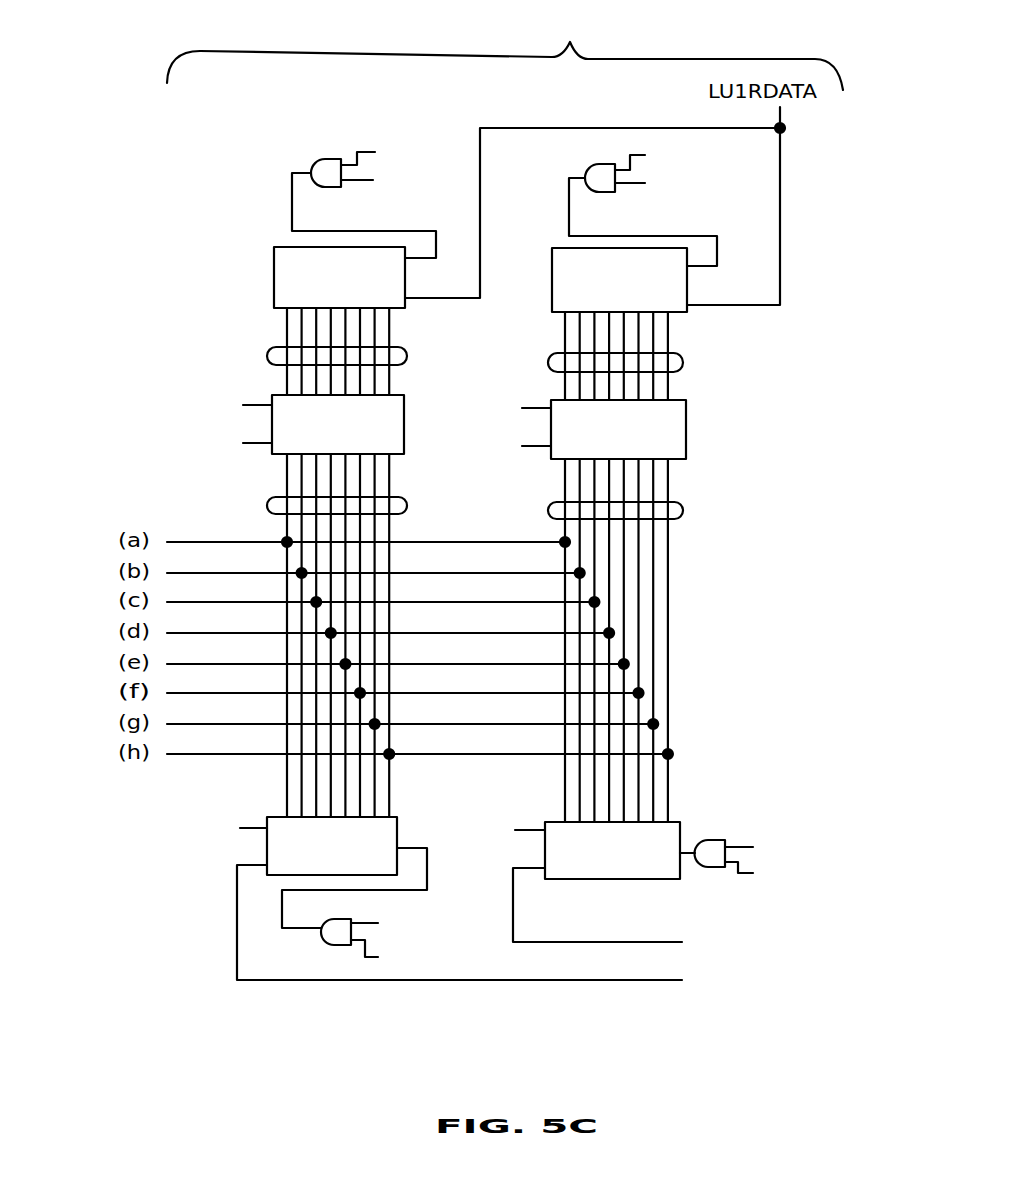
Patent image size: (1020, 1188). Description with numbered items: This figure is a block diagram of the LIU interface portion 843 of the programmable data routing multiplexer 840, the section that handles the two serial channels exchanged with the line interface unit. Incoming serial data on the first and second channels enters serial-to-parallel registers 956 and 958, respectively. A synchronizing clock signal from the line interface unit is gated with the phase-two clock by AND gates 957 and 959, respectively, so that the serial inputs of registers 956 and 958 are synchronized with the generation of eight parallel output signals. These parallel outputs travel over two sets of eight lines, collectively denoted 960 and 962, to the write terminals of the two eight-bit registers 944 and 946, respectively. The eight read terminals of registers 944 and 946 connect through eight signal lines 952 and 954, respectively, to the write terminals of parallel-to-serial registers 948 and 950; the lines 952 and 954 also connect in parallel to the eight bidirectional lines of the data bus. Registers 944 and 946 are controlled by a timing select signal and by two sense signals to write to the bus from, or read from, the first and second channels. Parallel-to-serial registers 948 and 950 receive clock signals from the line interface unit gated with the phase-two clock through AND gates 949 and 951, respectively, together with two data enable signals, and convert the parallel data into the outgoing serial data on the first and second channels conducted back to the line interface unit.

The programmable data routing multiplexer 840 is at (823, 23).
The LIU interface portion 843 is at (505, 52).
The eight-bit register 944 is at (360, 431).
The eight-bit register 946 is at (648, 434).
The parallel-to-serial register 948 is at (362, 861).
The AND gate 949 is at (324, 940).
The parallel-to-serial register 950 is at (635, 865).
The AND gate 951 is at (703, 840).
The signal lines 952 is at (407, 506).
The signal lines 954 is at (683, 510).
The serial-to-parallel register 956 is at (368, 291).
The AND gate 957 is at (335, 145).
The serial-to-parallel register 958 is at (645, 295).
The AND gate 959 is at (601, 164).
The serial lines 960 is at (407, 355).
The serial lines 962 is at (683, 363).